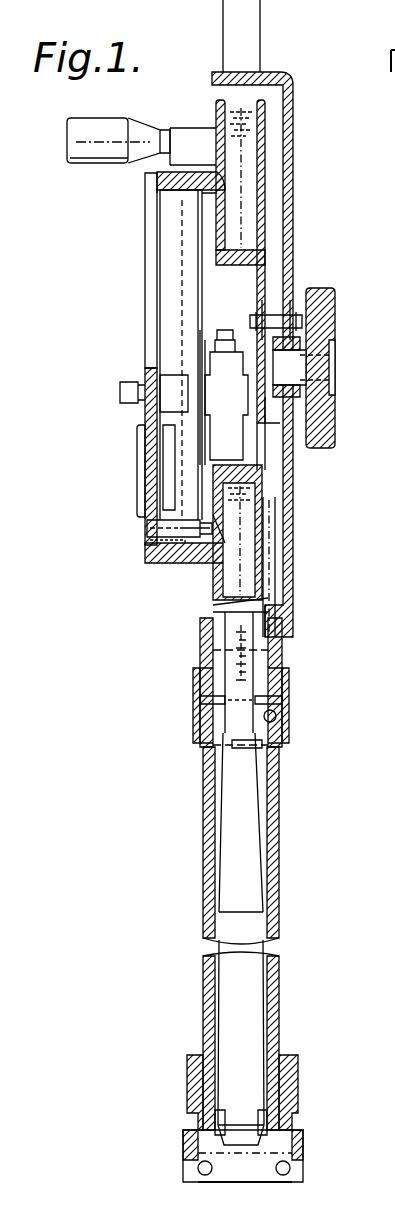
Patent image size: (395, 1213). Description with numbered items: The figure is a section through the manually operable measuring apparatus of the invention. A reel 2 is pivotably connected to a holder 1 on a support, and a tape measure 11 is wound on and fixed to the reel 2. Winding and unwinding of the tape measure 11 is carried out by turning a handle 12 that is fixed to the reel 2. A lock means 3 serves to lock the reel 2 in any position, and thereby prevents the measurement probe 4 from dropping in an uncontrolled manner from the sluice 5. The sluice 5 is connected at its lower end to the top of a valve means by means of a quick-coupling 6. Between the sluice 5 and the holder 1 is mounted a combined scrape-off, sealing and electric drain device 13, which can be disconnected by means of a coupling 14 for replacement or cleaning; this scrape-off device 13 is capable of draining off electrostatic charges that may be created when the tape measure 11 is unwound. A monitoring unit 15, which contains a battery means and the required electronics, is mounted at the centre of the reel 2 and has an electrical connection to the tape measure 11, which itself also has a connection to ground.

The holder 1 is at (270, 72).
The reel 2 is at (216, 110).
The lock means 3 is at (330, 318).
The measurement probe 4 is at (250, 933).
The sluice 5 is at (280, 812).
The quick-coupling 6 is at (298, 1068).
The tape measure 11 is at (243, 668).
The handle 12 is at (90, 155).
The combined scrape-off, sealing and electric drain device 13 is at (285, 718).
The coupling 14 is at (292, 742).
The monitoring unit 15 is at (147, 247).